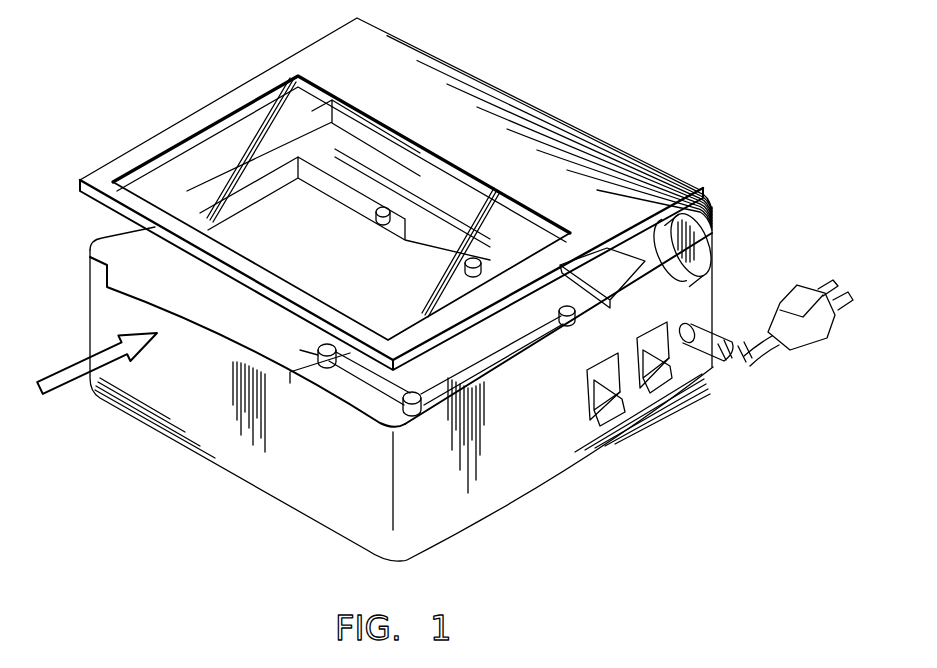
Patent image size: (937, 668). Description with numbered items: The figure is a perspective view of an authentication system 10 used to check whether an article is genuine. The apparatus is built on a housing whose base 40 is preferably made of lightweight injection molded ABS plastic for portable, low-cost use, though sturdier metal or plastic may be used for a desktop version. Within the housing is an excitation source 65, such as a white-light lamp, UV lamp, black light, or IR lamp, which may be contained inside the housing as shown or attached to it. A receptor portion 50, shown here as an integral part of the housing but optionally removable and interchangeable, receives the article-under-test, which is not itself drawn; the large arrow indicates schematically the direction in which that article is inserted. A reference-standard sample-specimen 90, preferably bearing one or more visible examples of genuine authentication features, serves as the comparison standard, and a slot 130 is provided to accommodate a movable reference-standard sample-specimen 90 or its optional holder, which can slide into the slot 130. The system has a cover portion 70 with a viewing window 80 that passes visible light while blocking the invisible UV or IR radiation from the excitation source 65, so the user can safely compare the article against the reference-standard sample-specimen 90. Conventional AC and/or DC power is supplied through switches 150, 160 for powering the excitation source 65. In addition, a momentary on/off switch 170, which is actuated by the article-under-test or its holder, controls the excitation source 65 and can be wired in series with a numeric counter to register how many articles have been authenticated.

The authentication system 10 is at (703, 290).
The base 40 is at (287, 487).
The receptor portion 50 is at (220, 322).
The excitation source 65 is at (704, 235).
The cover portion 70 is at (302, 62).
The viewing window 80 is at (228, 133).
The reference-standard sample-specimen 90 is at (490, 323).
The slot 130 is at (603, 311).
The switch 150 is at (610, 407).
The switch 160 is at (662, 375).
The momentary on/off switch 170 is at (378, 216).